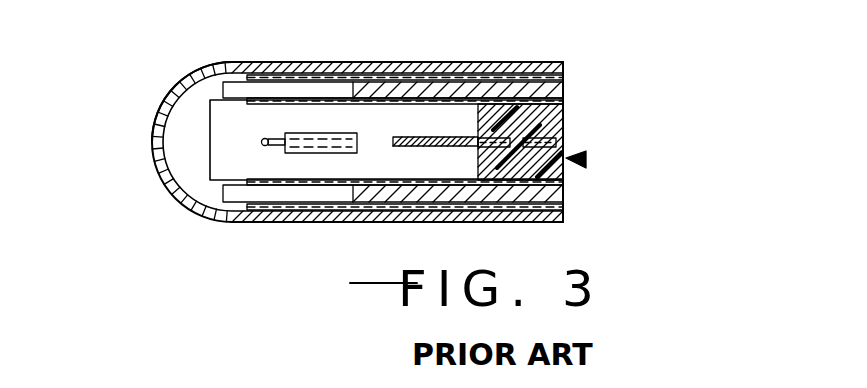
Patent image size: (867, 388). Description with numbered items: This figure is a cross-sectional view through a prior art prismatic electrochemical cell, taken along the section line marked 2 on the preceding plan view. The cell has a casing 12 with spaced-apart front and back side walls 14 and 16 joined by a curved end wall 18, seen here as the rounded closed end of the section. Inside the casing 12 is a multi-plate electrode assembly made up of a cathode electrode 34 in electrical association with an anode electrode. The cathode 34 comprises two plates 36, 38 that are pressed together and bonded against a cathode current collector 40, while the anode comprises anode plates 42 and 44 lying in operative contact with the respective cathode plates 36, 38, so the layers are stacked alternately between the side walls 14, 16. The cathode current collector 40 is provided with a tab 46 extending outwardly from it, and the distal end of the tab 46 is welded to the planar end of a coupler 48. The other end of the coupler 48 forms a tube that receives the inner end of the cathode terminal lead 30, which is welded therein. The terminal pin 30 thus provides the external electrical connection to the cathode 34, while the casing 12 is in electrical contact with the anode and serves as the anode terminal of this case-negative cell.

The casing 12 is at (327, 222).
The front side wall 14 is at (223, 222).
The back side wall 16 is at (322, 62).
The curved end wall 18 is at (162, 108).
The cathode terminal lead 30 is at (337, 75).
The cathode electrode 34 is at (586, 161).
The cathode plate 36 is at (563, 93).
The cathode plate 38 is at (553, 174).
The cathode current collector 40 is at (560, 200).
The anode plate 42 is at (548, 65).
The anode plate 44 is at (478, 224).
The tab 46 is at (450, 92).
The coupler 48 is at (370, 142).
The section line 2 is at (127, 145).